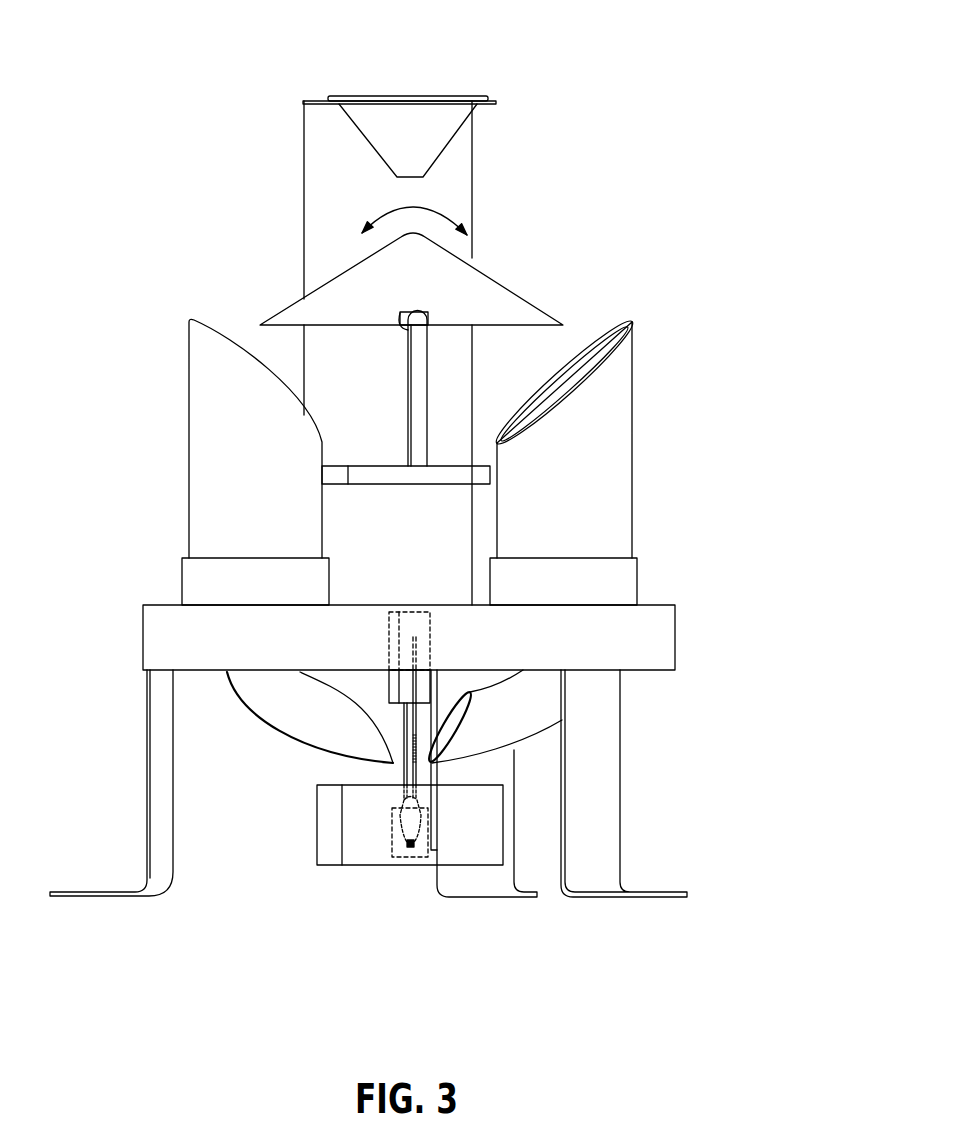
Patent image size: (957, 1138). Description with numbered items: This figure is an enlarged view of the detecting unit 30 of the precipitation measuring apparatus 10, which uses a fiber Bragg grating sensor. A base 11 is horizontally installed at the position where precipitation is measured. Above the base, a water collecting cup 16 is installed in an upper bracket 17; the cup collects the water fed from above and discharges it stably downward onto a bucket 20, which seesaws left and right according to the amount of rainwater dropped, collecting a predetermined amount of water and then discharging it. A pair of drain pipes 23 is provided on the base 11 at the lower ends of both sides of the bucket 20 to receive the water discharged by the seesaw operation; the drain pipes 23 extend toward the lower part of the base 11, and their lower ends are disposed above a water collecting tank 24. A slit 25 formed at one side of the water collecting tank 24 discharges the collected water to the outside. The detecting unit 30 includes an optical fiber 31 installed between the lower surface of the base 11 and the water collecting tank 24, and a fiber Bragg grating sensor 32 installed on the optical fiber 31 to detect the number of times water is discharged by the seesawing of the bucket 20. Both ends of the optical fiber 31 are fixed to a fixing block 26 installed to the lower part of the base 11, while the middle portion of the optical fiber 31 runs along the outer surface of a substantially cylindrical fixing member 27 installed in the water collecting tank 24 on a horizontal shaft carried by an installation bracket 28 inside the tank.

The precipitation measuring apparatus 10 is at (158, 31).
The base 11 is at (655, 639).
The water collecting cup 16 is at (443, 133).
The upper bracket 17 is at (453, 193).
The bucket 20 is at (543, 297).
The drain pipes 23 is at (223, 467).
The water collecting tank 24 is at (335, 855).
The slit 25 is at (433, 808).
The fixing block 26 is at (393, 688).
The fixing member 27 is at (407, 818).
The installation bracket 28 is at (408, 857).
The detecting unit 30 is at (371, 824).
The optical fiber 31 is at (393, 727).
The fiber Bragg grating sensor 32 is at (433, 762).